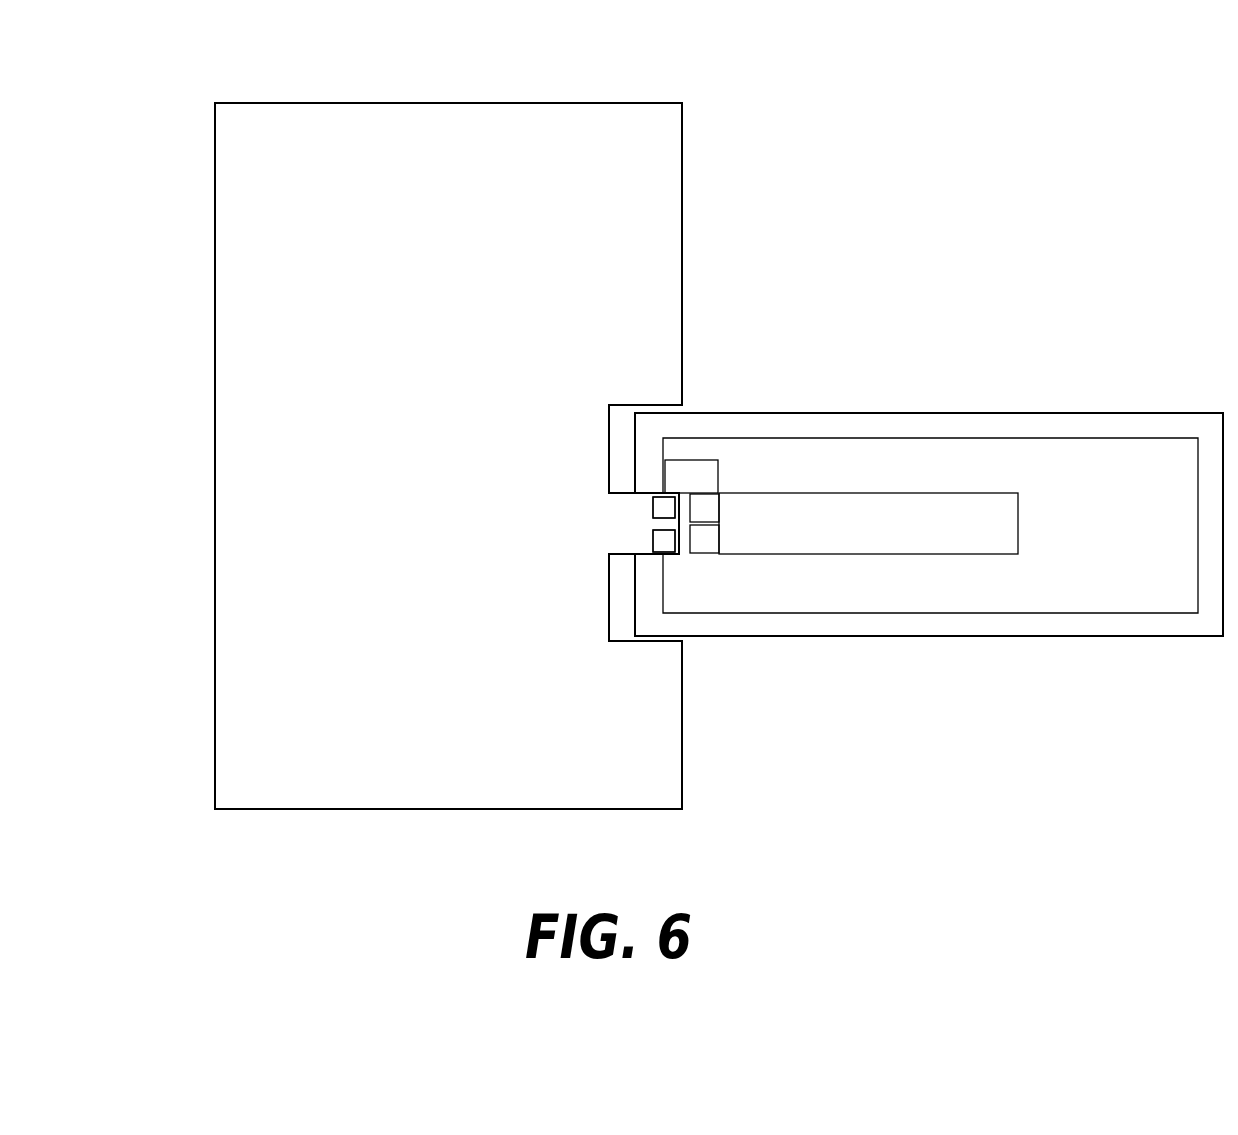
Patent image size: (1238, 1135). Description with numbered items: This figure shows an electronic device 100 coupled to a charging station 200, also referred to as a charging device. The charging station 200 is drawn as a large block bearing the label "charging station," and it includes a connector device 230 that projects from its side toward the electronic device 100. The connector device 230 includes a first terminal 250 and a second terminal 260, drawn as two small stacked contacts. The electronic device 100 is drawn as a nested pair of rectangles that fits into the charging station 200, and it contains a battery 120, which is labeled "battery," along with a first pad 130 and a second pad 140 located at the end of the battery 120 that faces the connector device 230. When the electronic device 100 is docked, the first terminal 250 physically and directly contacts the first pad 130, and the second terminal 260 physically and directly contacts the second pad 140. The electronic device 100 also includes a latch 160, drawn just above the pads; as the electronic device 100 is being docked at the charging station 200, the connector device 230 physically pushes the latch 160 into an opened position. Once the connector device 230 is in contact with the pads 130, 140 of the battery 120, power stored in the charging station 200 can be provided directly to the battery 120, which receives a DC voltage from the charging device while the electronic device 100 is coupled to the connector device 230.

The electronic device 100 is at (1030, 413).
The battery 120 is at (957, 493).
The first pad 130 is at (710, 508).
The second pad 140 is at (706, 538).
The latch 160 is at (690, 458).
The charging station 200 is at (602, 102).
The connector device 230 is at (653, 524).
The first terminal 250 is at (664, 504).
The second terminal 260 is at (664, 547).